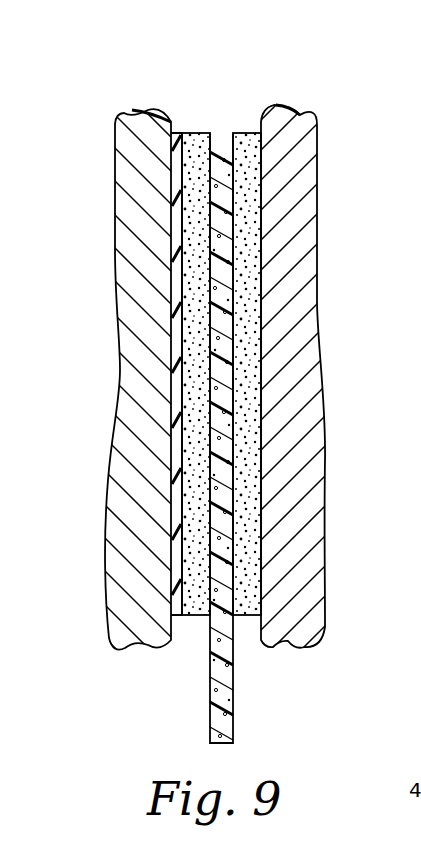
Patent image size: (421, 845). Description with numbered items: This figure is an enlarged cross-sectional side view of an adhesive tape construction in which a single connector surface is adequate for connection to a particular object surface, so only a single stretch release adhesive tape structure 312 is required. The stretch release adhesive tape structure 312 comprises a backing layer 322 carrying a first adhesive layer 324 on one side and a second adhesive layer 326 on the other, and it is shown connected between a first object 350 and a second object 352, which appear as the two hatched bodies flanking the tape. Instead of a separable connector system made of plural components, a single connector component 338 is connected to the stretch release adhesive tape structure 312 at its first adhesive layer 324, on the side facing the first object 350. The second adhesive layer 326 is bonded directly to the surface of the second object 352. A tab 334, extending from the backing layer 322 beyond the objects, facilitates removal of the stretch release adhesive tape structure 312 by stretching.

The stretch release adhesive tape structure 312 is at (222, 100).
The backing layer 322 is at (215, 220).
The first adhesive layer 324 is at (192, 182).
The second adhesive layer 326 is at (252, 188).
The tab 334 is at (210, 707).
The connector component 338 is at (177, 165).
The first object 350 is at (120, 412).
The second object 352 is at (320, 418).